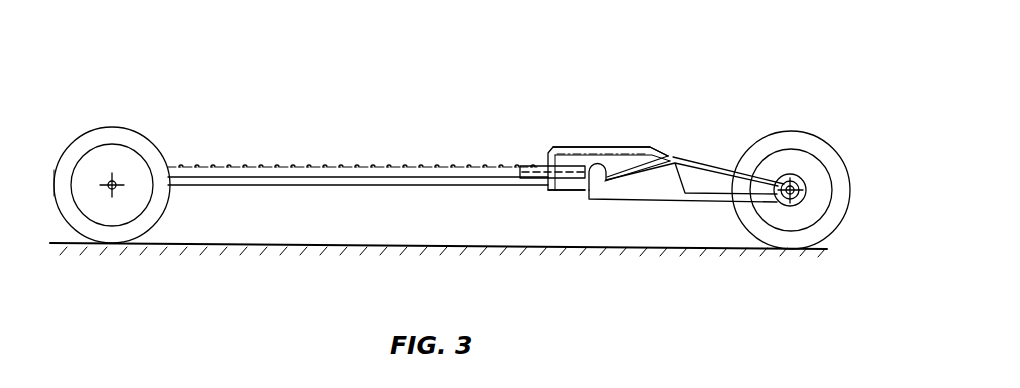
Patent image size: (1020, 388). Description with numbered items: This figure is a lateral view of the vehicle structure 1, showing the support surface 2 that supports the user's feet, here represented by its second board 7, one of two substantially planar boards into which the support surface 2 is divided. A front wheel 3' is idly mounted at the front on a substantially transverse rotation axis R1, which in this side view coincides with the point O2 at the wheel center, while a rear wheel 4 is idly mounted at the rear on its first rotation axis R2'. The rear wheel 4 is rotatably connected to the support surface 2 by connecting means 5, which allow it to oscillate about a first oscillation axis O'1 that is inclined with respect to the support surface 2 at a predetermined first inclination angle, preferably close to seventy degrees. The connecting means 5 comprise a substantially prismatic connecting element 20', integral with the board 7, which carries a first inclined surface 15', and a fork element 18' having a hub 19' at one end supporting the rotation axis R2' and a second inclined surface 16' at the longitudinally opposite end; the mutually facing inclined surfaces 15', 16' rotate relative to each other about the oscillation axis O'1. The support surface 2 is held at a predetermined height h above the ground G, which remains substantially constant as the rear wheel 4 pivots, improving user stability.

The vehicle 1 is at (718, 58).
The support surface 2 is at (310, 163).
The front wheel 3' is at (130, 179).
The rear wheel 4 is at (832, 146).
The connecting means 5 is at (665, 117).
The second board 7 is at (388, 162).
The first inclined surface 15' is at (585, 207).
The second inclined surface 16' is at (662, 139).
The fork element 18' is at (686, 201).
The hub 19' is at (784, 150).
The prismatic connecting element 20' is at (609, 140).
The ground G is at (438, 264).
The height h is at (332, 186).
The rotation axis R1 is at (113, 180).
The front wheel center O2 is at (97, 91).
The first rotation axis R2' is at (777, 248).
The first oscillation axis O'1 is at (625, 135).